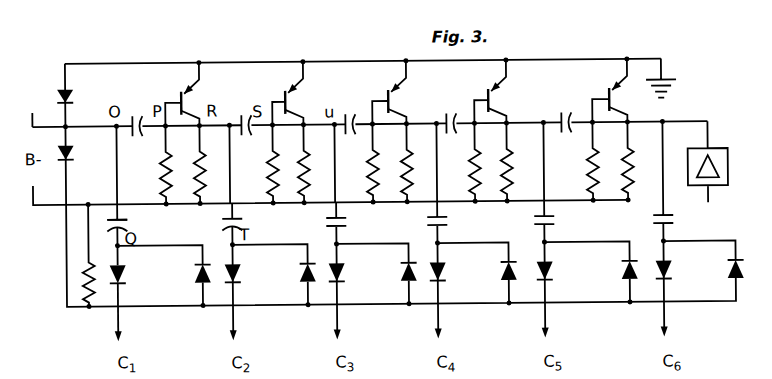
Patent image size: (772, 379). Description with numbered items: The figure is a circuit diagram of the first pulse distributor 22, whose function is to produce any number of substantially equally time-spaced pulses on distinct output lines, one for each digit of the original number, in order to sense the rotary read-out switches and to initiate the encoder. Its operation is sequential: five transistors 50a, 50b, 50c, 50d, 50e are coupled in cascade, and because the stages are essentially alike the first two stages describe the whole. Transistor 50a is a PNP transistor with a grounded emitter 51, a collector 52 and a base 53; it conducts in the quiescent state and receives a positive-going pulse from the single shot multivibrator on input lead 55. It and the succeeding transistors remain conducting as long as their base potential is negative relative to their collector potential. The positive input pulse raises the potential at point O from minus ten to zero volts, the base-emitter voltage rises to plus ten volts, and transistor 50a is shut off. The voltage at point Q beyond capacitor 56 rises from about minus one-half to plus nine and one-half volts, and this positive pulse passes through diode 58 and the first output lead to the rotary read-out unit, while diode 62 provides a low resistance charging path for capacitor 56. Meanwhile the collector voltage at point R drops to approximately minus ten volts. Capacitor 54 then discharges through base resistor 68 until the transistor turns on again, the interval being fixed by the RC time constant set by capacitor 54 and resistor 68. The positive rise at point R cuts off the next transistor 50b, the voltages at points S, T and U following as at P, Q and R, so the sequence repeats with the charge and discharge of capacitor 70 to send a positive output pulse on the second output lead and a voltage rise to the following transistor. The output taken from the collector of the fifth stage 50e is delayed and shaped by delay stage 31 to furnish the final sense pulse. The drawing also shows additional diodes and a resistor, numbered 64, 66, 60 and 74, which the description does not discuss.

The pulse distributor 22 is at (86, 56).
The delay stage 31 is at (727, 168).
The transistor 50a is at (190, 79).
The transistor 50b is at (298, 82).
The transistor 50c is at (395, 83).
The transistor 50d is at (497, 84).
The transistor 50e is at (613, 85).
The emitter 51 is at (201, 73).
The collector 52 is at (190, 104).
The base 53 is at (178, 123).
The capacitor 54 is at (147, 135).
The input lead 55 is at (31, 107).
The capacitor 56 is at (122, 223).
The diode 58 is at (124, 270).
The capacitor 60 is at (121, 317).
The diode 62 is at (198, 285).
The diode 64 is at (72, 150).
The diode 66 is at (72, 93).
The base resistor 68 is at (175, 165).
The capacitor 70 is at (244, 216).
The resistor 74 is at (210, 164).